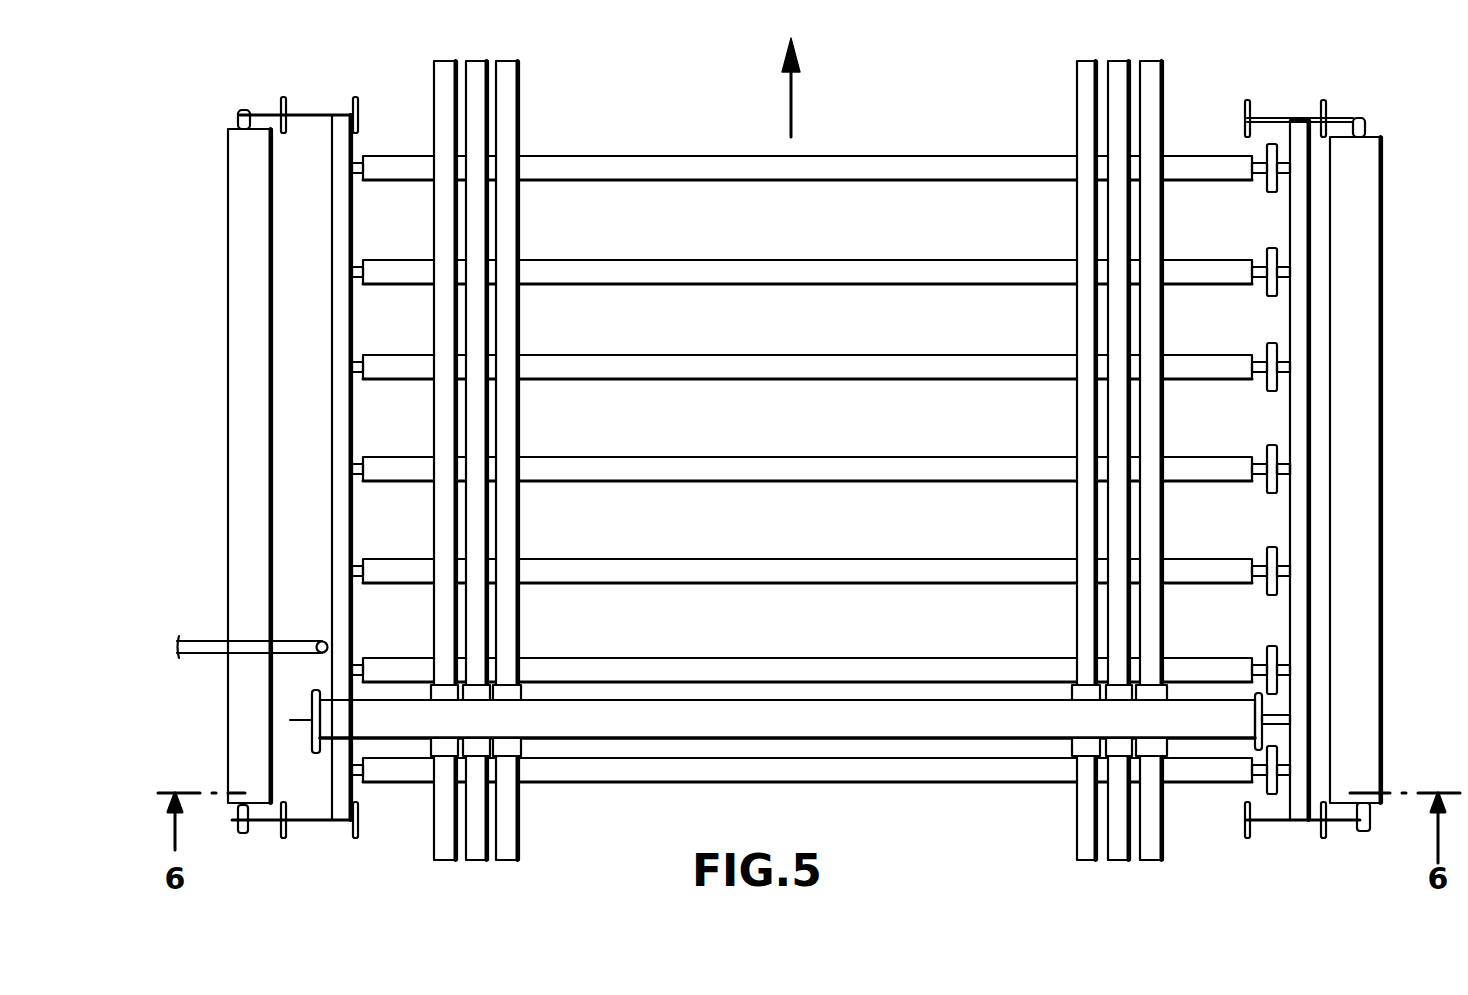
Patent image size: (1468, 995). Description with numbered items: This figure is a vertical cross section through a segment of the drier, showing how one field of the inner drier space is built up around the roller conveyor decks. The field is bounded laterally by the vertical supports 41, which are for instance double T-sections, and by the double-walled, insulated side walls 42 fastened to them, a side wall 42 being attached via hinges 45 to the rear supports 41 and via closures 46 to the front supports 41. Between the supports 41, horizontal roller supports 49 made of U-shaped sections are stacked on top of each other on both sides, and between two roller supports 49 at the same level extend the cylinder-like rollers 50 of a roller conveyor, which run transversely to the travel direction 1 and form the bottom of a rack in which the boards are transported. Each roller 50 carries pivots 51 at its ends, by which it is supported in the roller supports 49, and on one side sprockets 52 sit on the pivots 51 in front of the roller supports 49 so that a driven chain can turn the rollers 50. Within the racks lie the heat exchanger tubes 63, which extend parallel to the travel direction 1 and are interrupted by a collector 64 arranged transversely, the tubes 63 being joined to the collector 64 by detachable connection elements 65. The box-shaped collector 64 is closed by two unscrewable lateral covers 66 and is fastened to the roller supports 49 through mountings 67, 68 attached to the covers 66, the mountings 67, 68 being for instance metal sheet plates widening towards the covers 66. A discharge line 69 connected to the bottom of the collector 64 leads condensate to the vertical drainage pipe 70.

The travel direction 1 is at (795, 97).
The vertical support 41 is at (1323, 102).
The side wall 42 is at (1353, 180).
The hinge 45 is at (1360, 118).
The closure 46 is at (1350, 822).
The roller support 49 is at (1300, 242).
The roller 50 is at (1220, 262).
The pivot 51 is at (1287, 467).
The sprocket 52 is at (1278, 478).
The tube 63 is at (435, 322).
The collector 64 is at (1008, 716).
The detachable connection element 65 is at (478, 692).
The lateral cover 66 is at (312, 695).
The mounting 67 is at (303, 720).
The mounting 68 is at (1282, 728).
The discharge line 69 is at (313, 668).
The drainage pipe 70 is at (302, 648).